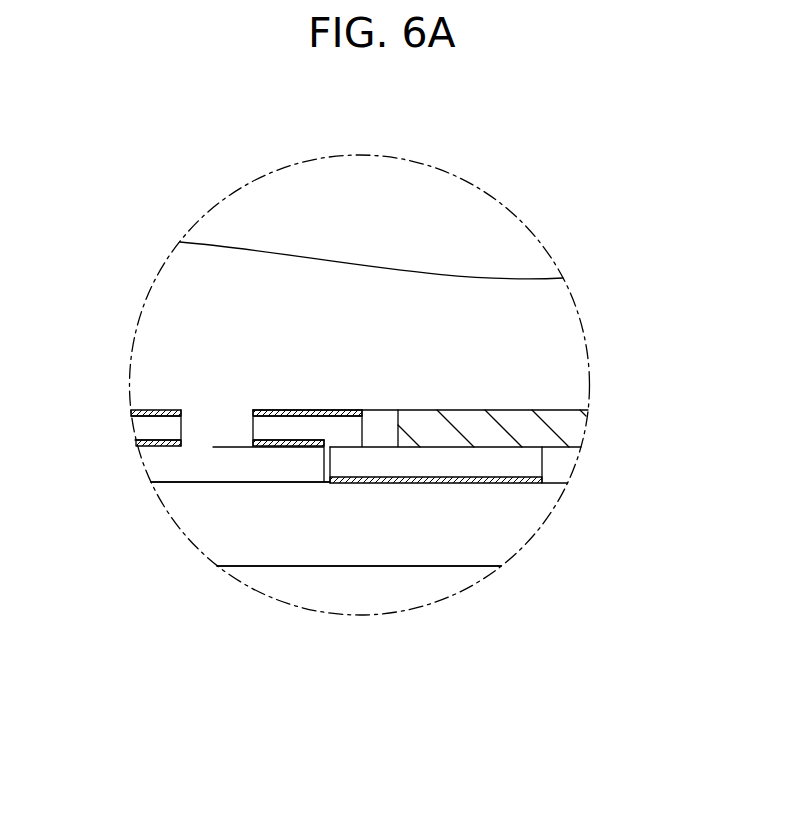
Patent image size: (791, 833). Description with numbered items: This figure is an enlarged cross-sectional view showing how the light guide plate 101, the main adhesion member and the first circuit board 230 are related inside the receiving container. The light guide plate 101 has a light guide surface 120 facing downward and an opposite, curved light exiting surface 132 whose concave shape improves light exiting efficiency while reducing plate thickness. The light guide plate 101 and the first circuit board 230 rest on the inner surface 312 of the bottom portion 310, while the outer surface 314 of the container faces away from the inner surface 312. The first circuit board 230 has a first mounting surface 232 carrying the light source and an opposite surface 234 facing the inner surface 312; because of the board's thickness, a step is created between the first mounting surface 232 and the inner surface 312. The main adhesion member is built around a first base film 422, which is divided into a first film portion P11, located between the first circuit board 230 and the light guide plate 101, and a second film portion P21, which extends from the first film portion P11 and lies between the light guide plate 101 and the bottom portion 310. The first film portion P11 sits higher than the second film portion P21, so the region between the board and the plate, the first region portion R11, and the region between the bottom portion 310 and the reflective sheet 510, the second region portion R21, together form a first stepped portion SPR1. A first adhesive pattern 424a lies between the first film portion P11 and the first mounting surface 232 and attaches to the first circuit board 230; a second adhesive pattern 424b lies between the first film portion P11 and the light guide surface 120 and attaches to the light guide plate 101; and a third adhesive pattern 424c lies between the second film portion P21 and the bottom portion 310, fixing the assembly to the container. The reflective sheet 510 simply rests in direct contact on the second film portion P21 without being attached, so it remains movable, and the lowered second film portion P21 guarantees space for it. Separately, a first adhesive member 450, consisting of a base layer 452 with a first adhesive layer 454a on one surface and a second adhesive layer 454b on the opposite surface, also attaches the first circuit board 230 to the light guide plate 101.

The light guide plate 101 is at (563, 315).
The light guide surface 120 is at (548, 407).
The light exiting surface 132 is at (522, 272).
The first circuit board 230 is at (172, 482).
The first mounting surface 232 is at (213, 448).
The opposite surface 234 is at (168, 481).
The bottom portion 310 is at (269, 543).
The inner surface 312 is at (240, 492).
The outer surface 314 is at (237, 564).
The first base film 422 is at (360, 560).
The first adhesive pattern 424a is at (265, 416).
The second adhesive pattern 424b is at (322, 416).
The third adhesive pattern 424c is at (522, 483).
The first adhesive member 450 is at (182, 428).
The base layer 452 is at (140, 426).
The first adhesive layer 454a is at (142, 411).
The second adhesive layer 454b is at (140, 444).
The reflective sheet 510 is at (572, 430).
The first film portion P11 is at (297, 430).
The second film portion P21 is at (422, 465).
The first region portion R11 is at (327, 143).
The first stepped portion SPR1 is at (400, 143).
The second region portion R21 is at (544, 143).